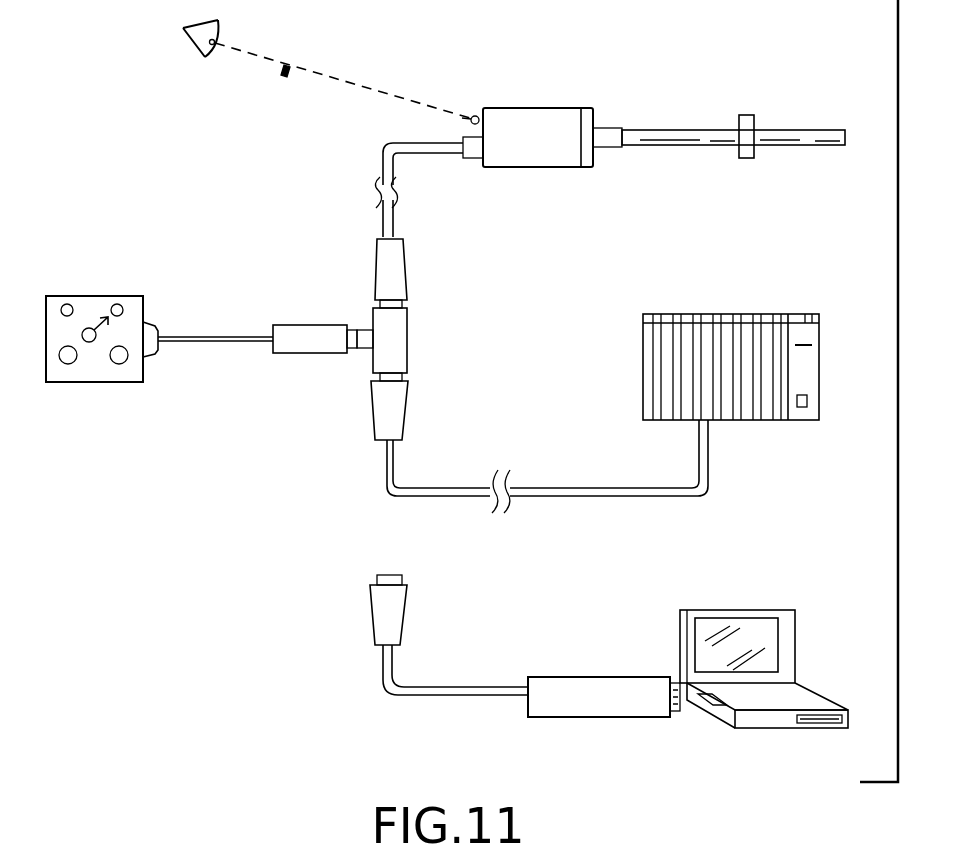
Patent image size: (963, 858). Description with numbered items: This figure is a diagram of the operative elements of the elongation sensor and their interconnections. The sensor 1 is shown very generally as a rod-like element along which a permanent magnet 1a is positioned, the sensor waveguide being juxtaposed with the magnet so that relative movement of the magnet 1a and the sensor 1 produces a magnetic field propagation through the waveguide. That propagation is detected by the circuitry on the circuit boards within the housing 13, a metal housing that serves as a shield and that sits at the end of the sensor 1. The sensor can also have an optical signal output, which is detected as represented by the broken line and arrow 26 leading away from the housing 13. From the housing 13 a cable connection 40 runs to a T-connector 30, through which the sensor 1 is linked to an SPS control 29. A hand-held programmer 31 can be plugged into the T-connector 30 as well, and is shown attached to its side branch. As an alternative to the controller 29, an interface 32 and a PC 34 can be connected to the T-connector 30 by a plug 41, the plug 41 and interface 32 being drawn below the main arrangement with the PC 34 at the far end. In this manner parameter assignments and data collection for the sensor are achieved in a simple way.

The sensor 1 is at (676, 130).
The permanent magnet 1a is at (745, 115).
The second shield 13 is at (537, 108).
The broken line and arrow 26 is at (285, 73).
The SPS control 29 is at (700, 314).
The T-connector 30 is at (378, 362).
The hand-held programmer 31 is at (100, 296).
The interface 32 is at (575, 686).
The PC 34 is at (768, 722).
The cable connection 40 is at (383, 150).
The plug 41 is at (383, 615).